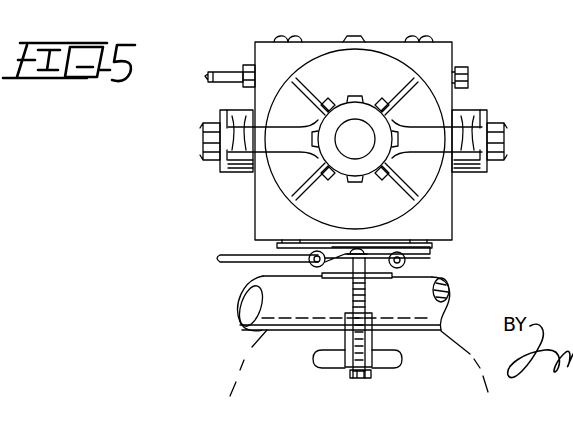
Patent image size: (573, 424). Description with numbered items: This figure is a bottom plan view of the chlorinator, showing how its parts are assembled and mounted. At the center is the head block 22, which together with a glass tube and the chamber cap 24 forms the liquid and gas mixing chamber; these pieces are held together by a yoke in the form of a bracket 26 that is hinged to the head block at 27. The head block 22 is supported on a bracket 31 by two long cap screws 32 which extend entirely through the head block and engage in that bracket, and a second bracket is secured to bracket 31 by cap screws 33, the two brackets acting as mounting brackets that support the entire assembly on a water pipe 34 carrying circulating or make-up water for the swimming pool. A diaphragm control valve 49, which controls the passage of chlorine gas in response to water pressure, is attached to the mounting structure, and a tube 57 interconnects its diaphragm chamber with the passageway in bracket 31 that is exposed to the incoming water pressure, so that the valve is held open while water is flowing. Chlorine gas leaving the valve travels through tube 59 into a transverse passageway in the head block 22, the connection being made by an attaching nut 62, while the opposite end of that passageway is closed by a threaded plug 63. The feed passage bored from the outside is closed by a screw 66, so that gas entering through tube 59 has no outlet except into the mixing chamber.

The head block 22 is at (458, 46).
The chamber cap 24 is at (369, 58).
The bracket 26 is at (440, 146).
The hinge 27 is at (203, 142).
The bracket 31 is at (397, 272).
The cap screws 32 is at (286, 40).
The cap screws 33 is at (340, 328).
The water pipe 34 is at (262, 293).
The diaphragm control valve 49 is at (246, 354).
The tube 57 is at (217, 256).
The tube 59 is at (211, 75).
The attaching nut 62 is at (246, 66).
The threaded plug 63 is at (469, 78).
The screw 66 is at (357, 40).